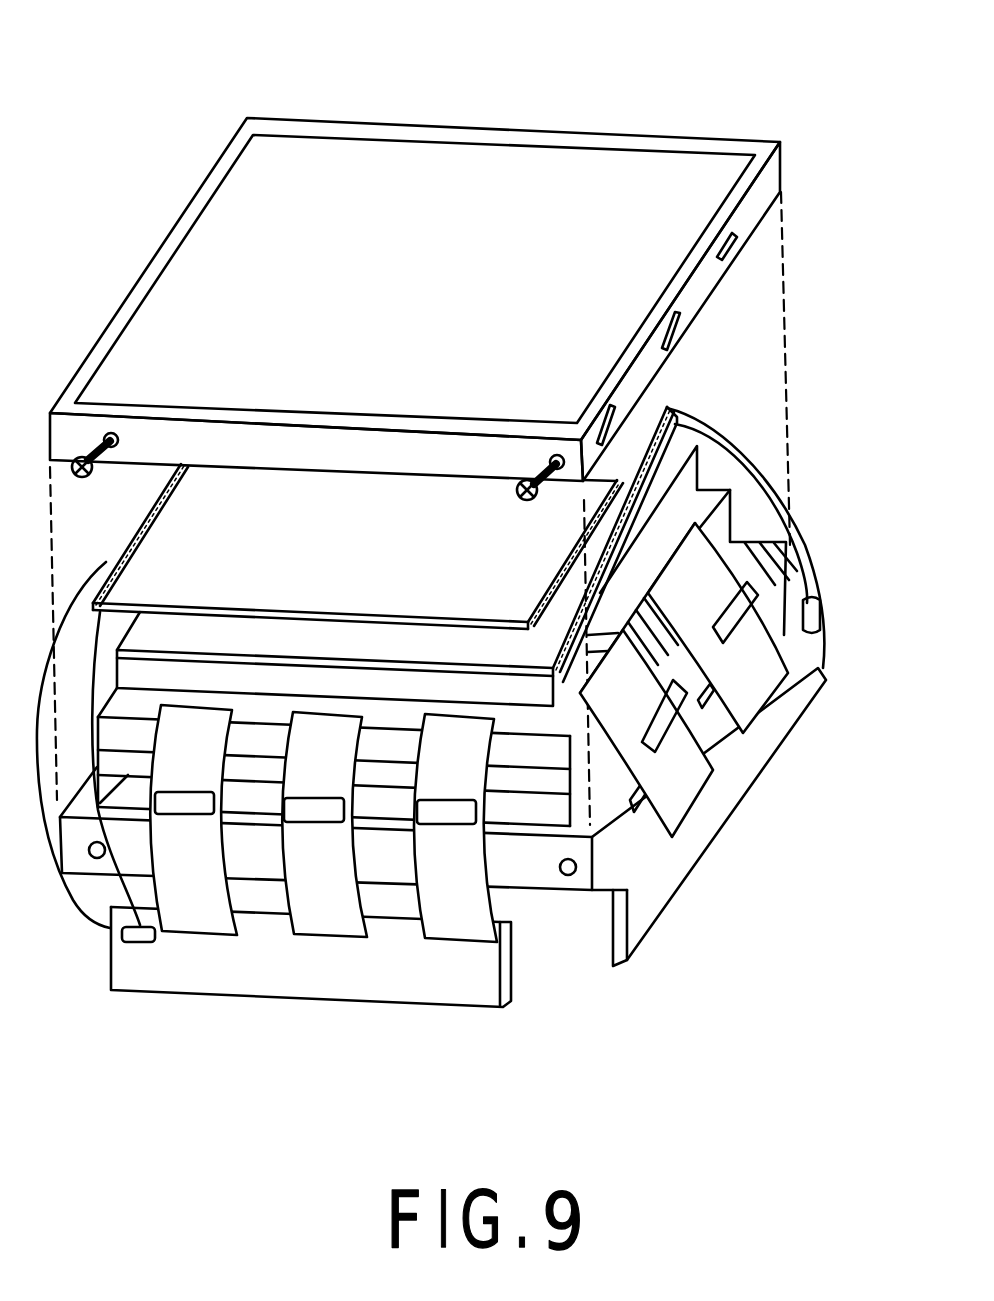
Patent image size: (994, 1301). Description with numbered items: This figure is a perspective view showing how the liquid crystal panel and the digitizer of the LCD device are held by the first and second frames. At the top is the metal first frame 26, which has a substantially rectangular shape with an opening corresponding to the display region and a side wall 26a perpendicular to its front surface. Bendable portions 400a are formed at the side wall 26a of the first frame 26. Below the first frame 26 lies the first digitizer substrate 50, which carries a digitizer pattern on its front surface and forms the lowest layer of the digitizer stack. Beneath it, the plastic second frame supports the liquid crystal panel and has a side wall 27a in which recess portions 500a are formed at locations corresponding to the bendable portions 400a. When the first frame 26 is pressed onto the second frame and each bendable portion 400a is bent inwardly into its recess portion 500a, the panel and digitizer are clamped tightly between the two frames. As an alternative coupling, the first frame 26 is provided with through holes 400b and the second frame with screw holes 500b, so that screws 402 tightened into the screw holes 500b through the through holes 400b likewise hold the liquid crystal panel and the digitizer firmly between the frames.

The first frame 26 is at (534, 100).
The side wall 26a is at (743, 218).
The bendable portions 400a is at (685, 330).
The through holes 400b is at (563, 450).
The screws 402 is at (518, 494).
The first digitizer substrate 50 is at (160, 505).
The side wall 27a is at (605, 843).
The recess portions 500a is at (630, 808).
The screw holes 500b is at (565, 880).